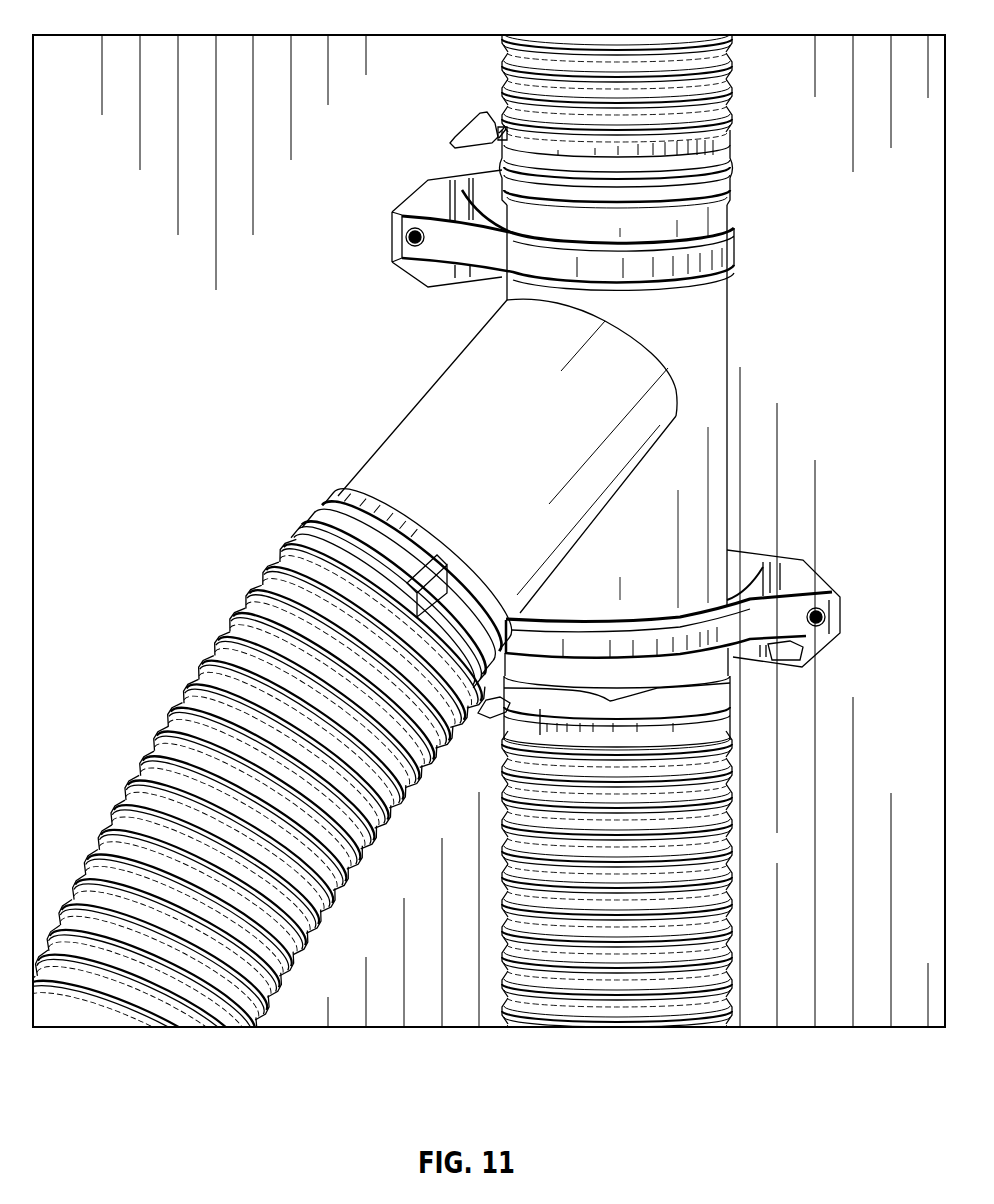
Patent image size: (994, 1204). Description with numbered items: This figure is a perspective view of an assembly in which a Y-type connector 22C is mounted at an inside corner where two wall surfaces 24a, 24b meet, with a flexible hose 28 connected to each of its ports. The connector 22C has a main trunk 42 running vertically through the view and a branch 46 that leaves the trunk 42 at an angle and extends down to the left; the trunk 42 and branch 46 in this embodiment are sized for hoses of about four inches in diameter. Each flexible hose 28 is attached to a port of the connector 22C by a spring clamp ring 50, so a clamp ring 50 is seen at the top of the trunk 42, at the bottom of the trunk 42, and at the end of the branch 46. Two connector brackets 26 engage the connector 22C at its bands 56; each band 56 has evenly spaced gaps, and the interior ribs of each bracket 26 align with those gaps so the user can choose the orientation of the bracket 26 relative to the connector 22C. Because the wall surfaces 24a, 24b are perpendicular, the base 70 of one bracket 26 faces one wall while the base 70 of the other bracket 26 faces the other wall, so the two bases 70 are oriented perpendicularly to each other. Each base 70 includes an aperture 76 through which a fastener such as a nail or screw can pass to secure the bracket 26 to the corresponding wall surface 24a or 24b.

The connector 22C is at (740, 324).
The wall surface 24a is at (297, 274).
The wall surface 24b is at (875, 252).
The connector bracket 26 is at (745, 252).
The flexible hose 28 is at (728, 90).
The main trunk 42 is at (715, 372).
The branch 46 is at (460, 398).
The spring clamp ring 50 is at (728, 133).
The band 56 is at (740, 228).
The base 70 is at (430, 198).
The aperture 76 is at (392, 217).